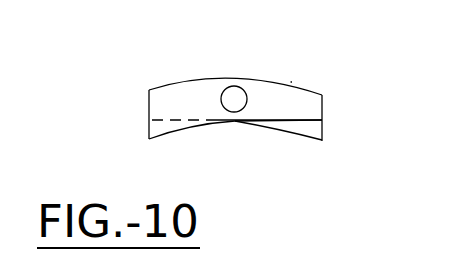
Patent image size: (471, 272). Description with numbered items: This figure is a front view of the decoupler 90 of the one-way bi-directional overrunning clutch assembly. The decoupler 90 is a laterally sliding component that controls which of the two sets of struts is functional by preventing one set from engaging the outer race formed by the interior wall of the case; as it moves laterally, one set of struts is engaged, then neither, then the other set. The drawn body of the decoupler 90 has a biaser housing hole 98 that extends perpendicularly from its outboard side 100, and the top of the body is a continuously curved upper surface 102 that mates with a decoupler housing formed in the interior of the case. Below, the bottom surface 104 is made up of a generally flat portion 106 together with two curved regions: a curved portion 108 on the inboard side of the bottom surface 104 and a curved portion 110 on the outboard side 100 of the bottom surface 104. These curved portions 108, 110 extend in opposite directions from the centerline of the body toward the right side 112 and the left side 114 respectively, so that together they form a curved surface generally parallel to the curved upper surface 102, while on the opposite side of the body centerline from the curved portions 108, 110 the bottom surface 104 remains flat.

The decoupler 90 is at (154, 58).
The biaser housing hole 98 is at (236, 96).
The outboard side 100 is at (165, 91).
The curved upper surface 102 is at (292, 82).
The bottom surface 104 is at (238, 122).
The flat portion 106 is at (323, 127).
The curved portion 108 is at (307, 130).
The curved portion 110 is at (153, 131).
The right side 112 is at (323, 108).
The left side 114 is at (149, 107).